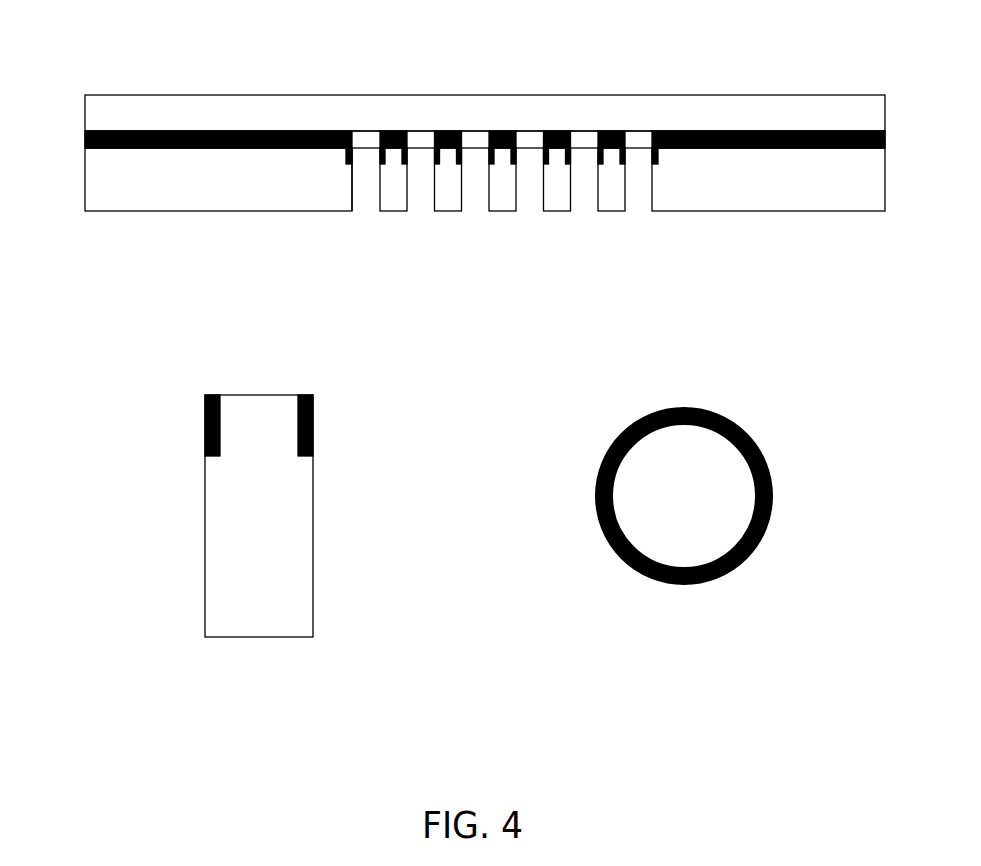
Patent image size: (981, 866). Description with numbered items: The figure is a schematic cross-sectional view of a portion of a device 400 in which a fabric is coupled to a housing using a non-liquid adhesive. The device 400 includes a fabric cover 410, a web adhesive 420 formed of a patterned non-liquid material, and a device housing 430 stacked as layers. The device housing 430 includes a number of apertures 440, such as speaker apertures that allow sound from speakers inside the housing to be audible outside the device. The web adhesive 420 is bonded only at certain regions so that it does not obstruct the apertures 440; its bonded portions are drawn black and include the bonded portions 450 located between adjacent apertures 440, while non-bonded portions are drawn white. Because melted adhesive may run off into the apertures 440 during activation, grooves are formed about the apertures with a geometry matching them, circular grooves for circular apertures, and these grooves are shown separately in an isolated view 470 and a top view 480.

The device 400 is at (852, 53).
The fabric cover 410 is at (85, 112).
The web adhesive 420 is at (85, 137).
The device housing 430 is at (85, 178).
The apertures 440 is at (368, 200).
The bonded portions 450 is at (392, 130).
The isolated view 470 is at (332, 365).
The top view 480 is at (760, 371).